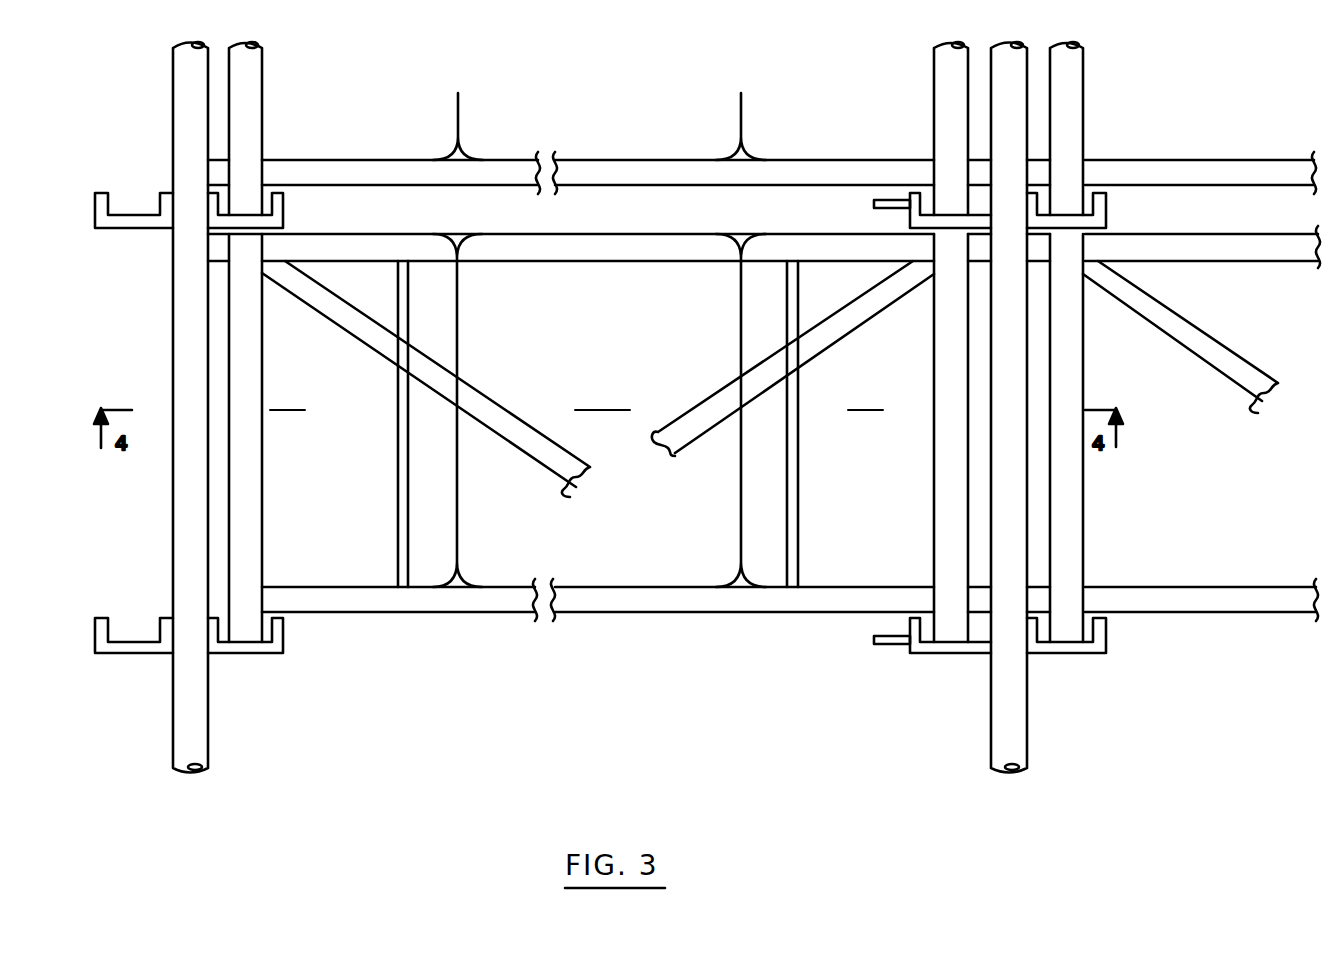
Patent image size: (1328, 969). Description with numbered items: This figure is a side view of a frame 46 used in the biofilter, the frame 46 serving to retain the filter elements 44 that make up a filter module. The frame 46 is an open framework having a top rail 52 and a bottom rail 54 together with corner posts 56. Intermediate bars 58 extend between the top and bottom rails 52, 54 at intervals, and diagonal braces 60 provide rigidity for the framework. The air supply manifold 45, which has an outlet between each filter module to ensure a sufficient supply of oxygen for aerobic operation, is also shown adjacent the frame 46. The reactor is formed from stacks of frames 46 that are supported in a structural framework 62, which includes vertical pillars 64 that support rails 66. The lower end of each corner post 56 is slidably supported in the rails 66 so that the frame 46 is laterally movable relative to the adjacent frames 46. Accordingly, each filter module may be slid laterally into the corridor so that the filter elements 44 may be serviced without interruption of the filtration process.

The filter element 44 is at (510, 97).
The air supply manifold 45 is at (878, 644).
The frame 46 is at (347, 142).
The top rail 52 is at (623, 250).
The bottom rail 54 is at (752, 612).
The corner post 56 is at (250, 530).
The intermediate bar 58 is at (400, 427).
The diagonal brace 60 is at (365, 335).
The structural framework 62 is at (212, 781).
The vertical pillar 64 is at (195, 720).
The rail 66 is at (138, 653).